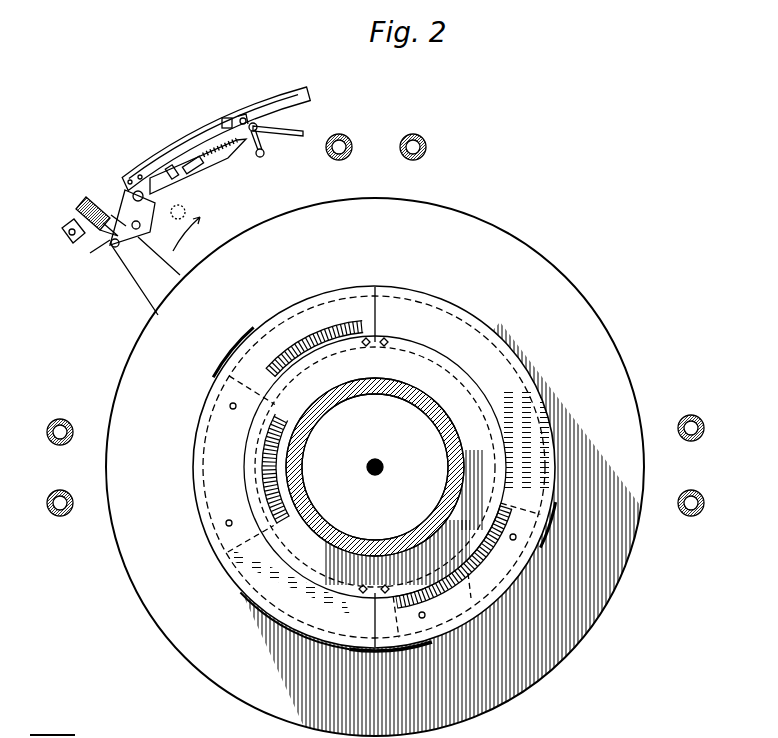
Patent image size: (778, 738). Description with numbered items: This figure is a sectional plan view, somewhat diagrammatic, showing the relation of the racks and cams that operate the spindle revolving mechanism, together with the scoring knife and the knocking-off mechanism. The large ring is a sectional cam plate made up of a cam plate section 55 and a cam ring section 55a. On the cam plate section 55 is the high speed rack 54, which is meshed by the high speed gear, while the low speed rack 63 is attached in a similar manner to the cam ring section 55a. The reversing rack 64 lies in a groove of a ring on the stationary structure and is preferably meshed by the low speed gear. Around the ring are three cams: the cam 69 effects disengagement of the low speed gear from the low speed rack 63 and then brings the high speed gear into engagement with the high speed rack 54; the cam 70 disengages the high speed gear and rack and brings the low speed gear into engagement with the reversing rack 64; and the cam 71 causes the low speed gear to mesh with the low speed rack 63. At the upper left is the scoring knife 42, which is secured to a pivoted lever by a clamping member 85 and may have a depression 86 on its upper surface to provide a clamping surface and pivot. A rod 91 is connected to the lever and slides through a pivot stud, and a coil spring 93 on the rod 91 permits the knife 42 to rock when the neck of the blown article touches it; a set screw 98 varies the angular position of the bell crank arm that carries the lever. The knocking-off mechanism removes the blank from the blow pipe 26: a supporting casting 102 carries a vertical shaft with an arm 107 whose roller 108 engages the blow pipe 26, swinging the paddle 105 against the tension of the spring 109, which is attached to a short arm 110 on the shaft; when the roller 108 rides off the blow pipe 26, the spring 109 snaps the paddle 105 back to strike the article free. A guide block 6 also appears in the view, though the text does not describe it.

The guide block 6 is at (170, 173).
The blow pipe 26 is at (407, 137).
The scoring knife 42 is at (183, 180).
The high speed rack 54 is at (267, 441).
The cam plate section 55 is at (215, 479).
The cam ring section 55a is at (539, 417).
The low speed rack 63 is at (454, 581).
The reversing rack 64 is at (341, 326).
The cam 69 is at (332, 647).
The cam 70 is at (228, 352).
The cam 71 is at (555, 517).
The clamping member 85 is at (150, 235).
The depression 86 is at (135, 229).
The rod 91 is at (112, 246).
The coil spring 93 is at (92, 198).
The set screw 98 is at (70, 234).
The supporting casting 102 is at (228, 122).
The paddle 105 is at (291, 122).
The arm 107 is at (264, 149).
The roller 108 is at (265, 156).
The spring 109 is at (237, 147).
The short arm 110 is at (243, 118).